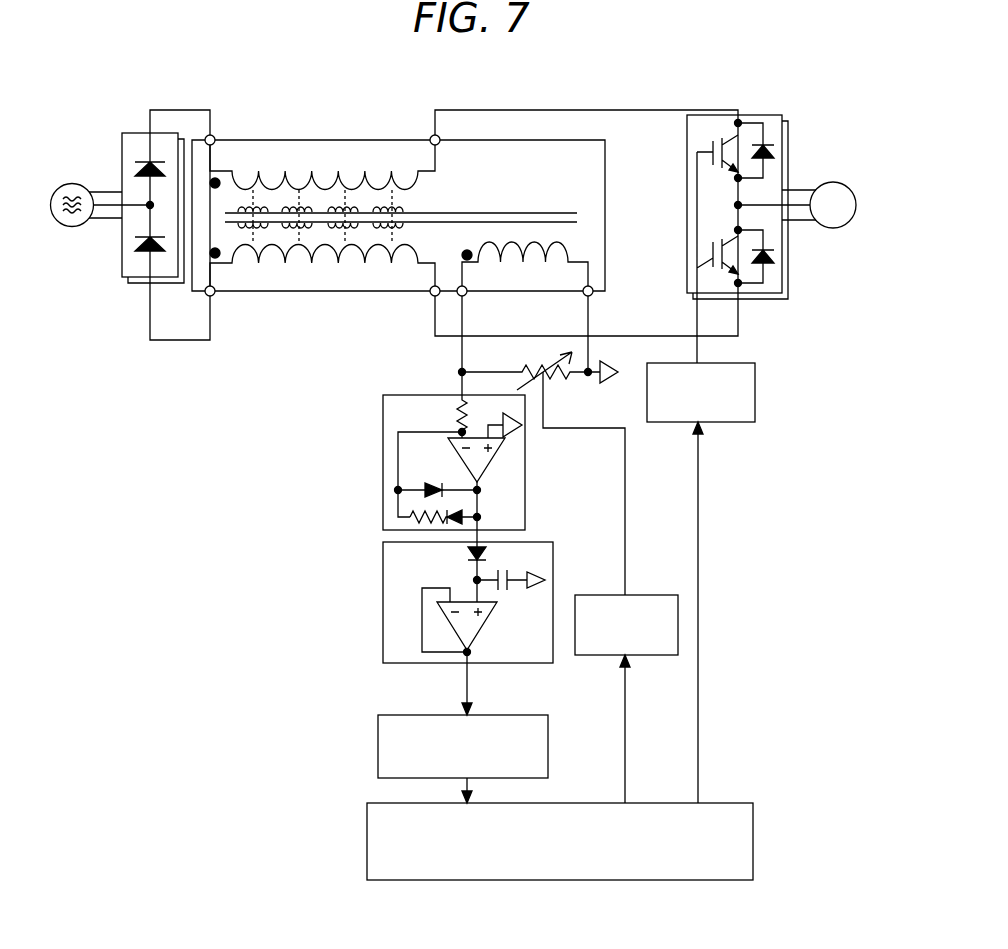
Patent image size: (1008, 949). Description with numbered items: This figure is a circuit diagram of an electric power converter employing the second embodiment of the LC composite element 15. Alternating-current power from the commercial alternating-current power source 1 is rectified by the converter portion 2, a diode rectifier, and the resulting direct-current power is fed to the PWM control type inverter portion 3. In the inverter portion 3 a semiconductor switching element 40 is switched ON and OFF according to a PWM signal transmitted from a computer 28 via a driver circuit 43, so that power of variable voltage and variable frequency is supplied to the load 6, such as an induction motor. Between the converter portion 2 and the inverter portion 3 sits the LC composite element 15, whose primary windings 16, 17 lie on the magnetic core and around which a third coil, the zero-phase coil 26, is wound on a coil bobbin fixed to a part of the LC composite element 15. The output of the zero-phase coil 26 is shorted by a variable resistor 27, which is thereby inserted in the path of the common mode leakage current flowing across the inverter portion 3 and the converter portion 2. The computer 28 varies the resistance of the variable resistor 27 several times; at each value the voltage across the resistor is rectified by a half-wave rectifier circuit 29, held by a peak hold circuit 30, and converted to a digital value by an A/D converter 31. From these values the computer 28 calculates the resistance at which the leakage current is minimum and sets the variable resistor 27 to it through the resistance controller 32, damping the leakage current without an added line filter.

The commercial alternating-current power source 1 is at (74, 183).
The converter portion 2 is at (167, 133).
The inverter portion 3 is at (737, 182).
The load 6 is at (836, 183).
The LC composite element 15 is at (361, 139).
The primary winding 16 is at (310, 171).
The primary winding 17 is at (312, 263).
The zero-phase coil 26 is at (523, 240).
The variable resistor 27 is at (537, 358).
The computer 28 is at (380, 838).
The half-wave rectifier circuit 29 is at (383, 463).
The peak hold circuit 30 is at (383, 605).
The A/D converter 31 is at (378, 742).
The resistance controller 32 is at (678, 622).
The semiconductor switching element 40 is at (712, 140).
The driver circuit 43 is at (747, 410).